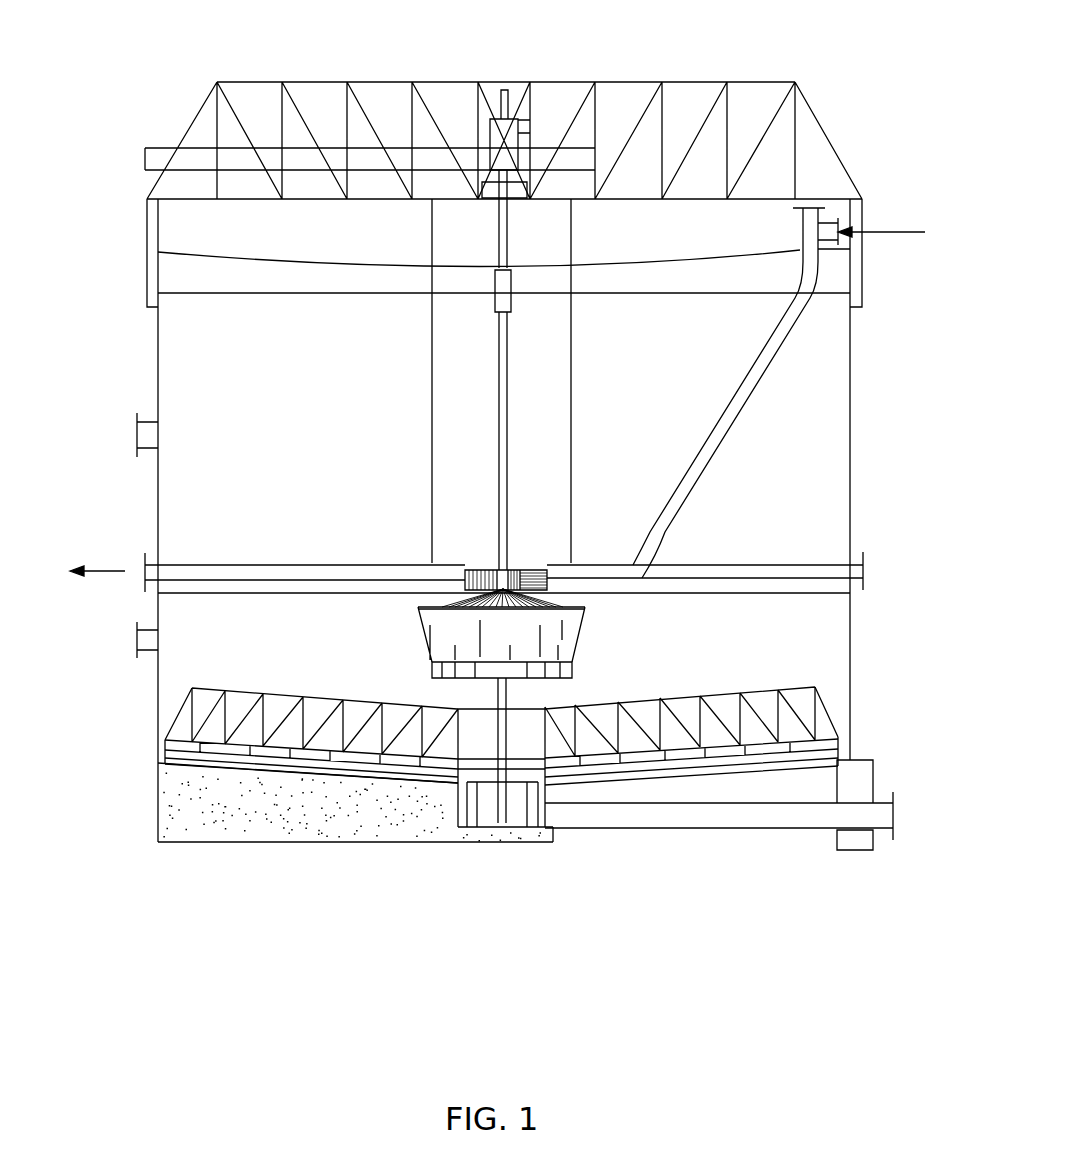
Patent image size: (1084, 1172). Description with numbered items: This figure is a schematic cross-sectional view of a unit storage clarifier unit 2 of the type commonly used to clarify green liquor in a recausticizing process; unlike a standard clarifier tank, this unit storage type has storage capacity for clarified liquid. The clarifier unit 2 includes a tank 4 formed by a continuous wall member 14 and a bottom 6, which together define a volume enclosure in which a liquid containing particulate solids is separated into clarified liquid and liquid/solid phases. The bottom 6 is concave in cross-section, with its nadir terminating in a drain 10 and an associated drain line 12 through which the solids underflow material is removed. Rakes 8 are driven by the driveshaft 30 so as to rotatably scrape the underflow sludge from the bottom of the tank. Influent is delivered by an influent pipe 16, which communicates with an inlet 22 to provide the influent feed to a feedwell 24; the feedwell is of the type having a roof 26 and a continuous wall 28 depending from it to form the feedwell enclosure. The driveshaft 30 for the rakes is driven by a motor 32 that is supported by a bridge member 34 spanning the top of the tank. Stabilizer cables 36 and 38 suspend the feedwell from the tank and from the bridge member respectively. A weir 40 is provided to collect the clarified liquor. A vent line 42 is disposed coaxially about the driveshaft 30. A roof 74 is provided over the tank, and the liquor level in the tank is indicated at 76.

The clarifier unit 2 is at (868, 378).
The tank 4 is at (217, 522).
The bottom 6 is at (360, 772).
The rakes 8 is at (830, 712).
The drain 10 is at (470, 807).
The drain line 12 is at (677, 828).
The wall member 14 is at (850, 462).
The influent pipe 16 is at (728, 442).
The inlet 22 is at (837, 228).
The feedwell 24 is at (557, 637).
The roof 26 is at (452, 600).
The continuous wall 28 is at (423, 636).
The driveshaft 30 is at (507, 698).
The motor 32 is at (505, 123).
The bridge member 34 is at (372, 80).
The stabilizer cable 36 is at (175, 596).
The stabilizer cable 38 is at (432, 468).
The weir 40 is at (827, 562).
The vent line 42 is at (510, 380).
The roof 74 is at (235, 252).
The liquor level 76 is at (205, 295).